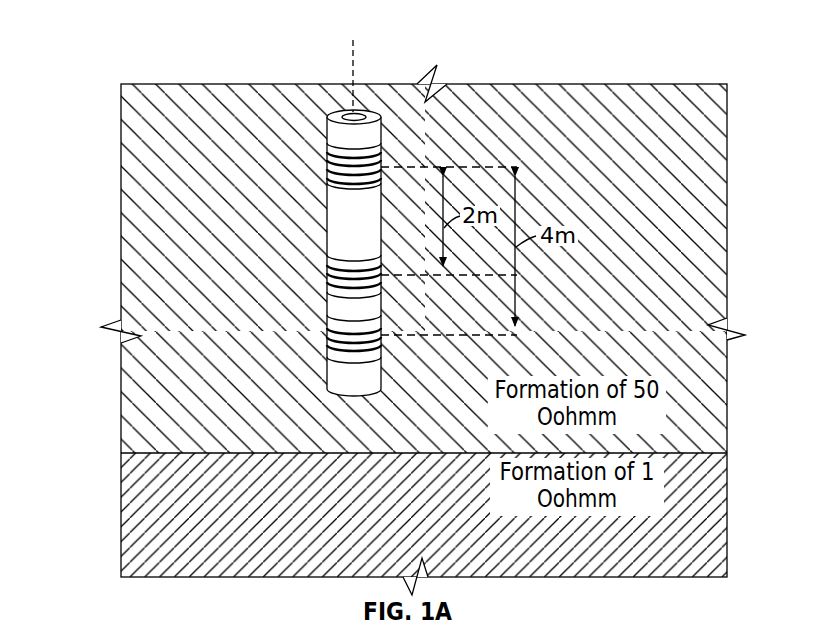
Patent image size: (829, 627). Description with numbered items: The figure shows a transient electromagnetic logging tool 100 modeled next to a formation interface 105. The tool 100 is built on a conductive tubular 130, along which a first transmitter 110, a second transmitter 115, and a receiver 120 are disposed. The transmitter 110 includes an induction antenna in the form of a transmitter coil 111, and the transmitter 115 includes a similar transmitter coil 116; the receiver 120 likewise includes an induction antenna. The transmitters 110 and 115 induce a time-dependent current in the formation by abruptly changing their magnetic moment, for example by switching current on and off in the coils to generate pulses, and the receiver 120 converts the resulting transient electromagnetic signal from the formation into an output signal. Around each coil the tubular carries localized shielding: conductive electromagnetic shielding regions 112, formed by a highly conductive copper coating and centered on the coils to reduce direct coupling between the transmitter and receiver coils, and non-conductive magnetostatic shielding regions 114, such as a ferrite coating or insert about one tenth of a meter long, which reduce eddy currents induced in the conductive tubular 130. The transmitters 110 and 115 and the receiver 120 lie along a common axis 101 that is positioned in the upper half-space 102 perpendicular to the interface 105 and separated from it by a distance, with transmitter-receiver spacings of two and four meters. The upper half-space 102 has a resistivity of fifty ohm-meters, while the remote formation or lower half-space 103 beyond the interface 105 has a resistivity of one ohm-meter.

The tool 100 is at (135, 64).
The common axis 101 is at (356, 64).
The upper half-space 102 is at (128, 246).
The remote formation (lower half-space) 103 is at (128, 512).
The formation interface 105 is at (184, 449).
The transmitter 110 is at (324, 162).
The transmitter coil 111 is at (383, 165).
The conductive electromagnetic shielding region 112 is at (327, 140).
The non-conductive magnetostatic shielding region 114 is at (327, 150).
The transmitter 115 is at (324, 279).
The transmitter coil 116 is at (324, 267).
The receiver 120 is at (324, 333).
The conductive tubular 130 is at (332, 226).